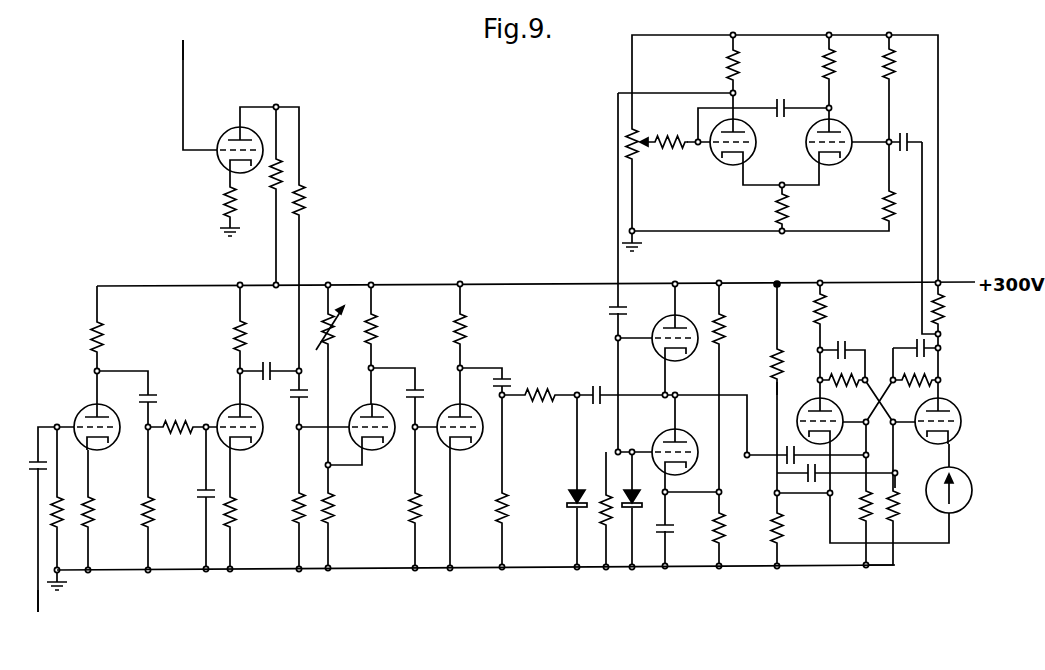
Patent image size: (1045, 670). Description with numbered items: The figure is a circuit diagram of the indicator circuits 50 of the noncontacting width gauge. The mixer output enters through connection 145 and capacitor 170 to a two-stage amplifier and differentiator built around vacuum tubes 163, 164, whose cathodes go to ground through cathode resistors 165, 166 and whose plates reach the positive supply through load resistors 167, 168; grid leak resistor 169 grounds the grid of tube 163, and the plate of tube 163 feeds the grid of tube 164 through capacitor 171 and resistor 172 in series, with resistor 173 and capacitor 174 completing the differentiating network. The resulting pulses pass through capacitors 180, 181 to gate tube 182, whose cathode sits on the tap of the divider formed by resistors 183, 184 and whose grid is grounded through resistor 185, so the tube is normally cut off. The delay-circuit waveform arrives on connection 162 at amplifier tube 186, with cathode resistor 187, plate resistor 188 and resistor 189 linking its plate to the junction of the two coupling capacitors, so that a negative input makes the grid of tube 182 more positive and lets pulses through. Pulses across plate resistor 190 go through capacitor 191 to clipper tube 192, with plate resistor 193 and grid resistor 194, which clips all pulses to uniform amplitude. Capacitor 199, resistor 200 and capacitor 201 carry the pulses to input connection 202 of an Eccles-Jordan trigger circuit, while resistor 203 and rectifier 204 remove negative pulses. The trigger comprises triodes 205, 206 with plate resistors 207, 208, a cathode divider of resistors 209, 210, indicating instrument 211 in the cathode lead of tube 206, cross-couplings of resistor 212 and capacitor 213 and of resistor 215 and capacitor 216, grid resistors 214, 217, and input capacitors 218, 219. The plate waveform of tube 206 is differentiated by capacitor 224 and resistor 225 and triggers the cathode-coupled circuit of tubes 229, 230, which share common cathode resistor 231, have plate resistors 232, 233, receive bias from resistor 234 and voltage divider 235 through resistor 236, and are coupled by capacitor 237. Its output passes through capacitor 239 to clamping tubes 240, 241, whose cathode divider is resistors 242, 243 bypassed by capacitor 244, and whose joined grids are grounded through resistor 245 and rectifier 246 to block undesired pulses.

The indicator circuits 50 is at (716, 602).
The connection 145 is at (38, 605).
The connection 162 is at (183, 50).
The vacuum tube 163 is at (80, 414).
The vacuum tube 164 is at (226, 410).
The cathode resistor 165 is at (93, 514).
The cathode resistor 166 is at (234, 515).
The load resistor 167 is at (102, 333).
The load resistor 168 is at (235, 333).
The grid leak resistor 169 is at (60, 498).
The capacitor 170 is at (36, 463).
The capacitor 171 is at (160, 394).
The resistor 172 is at (177, 432).
The resistor 173 is at (152, 496).
The capacitor 174 is at (191, 501).
The capacitor 180 is at (271, 357).
The capacitor 181 is at (292, 394).
The vacuum tube 182 is at (371, 455).
The resistor 183 is at (340, 333).
The resistor 184 is at (333, 517).
The resistor 185 is at (283, 508).
The vacuum tube 186 is at (232, 136).
The resistor 187 is at (226, 207).
The resistor 188 is at (263, 185).
The resistor 189 is at (304, 203).
The resistor 190 is at (377, 332).
The capacitor 191 is at (418, 389).
The vacuum tube 192 is at (463, 455).
The resistor 193 is at (465, 345).
The resistor 194 is at (415, 506).
The capacitor 199 is at (514, 381).
The resistor 200 is at (540, 404).
The capacitor 201 is at (595, 386).
The input connection 202 is at (771, 372).
The resistor 203 is at (501, 518).
The rectifier 204 is at (570, 492).
The triode 205 is at (840, 406).
The triode 206 is at (960, 406).
The resistor 207 is at (827, 307).
The resistor 208 is at (944, 307).
The resistor 209 is at (759, 360).
The resistor 210 is at (794, 528).
The indicating instrument 211 is at (968, 486).
The resistor 212 is at (926, 380).
The capacitor 213 is at (942, 345).
The resistor 214 is at (863, 522).
The resistor 215 is at (853, 376).
The capacitor 216 is at (841, 342).
The resistor 217 is at (898, 520).
The capacitor 218 is at (786, 464).
The capacitor 219 is at (812, 481).
The capacitor 224 is at (905, 131).
The resistor 225 is at (883, 208).
The vacuum tube 229 is at (726, 160).
The vacuum tube 230 is at (832, 160).
The common cathode resistor 231 is at (776, 212).
The resistor 232 is at (738, 59).
The resistor 233 is at (835, 57).
The resistor 234 is at (886, 70).
The voltage divider 235 is at (635, 150).
The resistor 236 is at (670, 131).
The capacitor 237 is at (779, 96).
The capacitor 239 is at (609, 307).
The vacuum tube 240 is at (666, 318).
The vacuum tube 241 is at (668, 431).
The resistor 242 is at (725, 323).
The resistor 243 is at (736, 528).
The capacitor 244 is at (669, 532).
The resistor 245 is at (600, 515).
The rectifier 246 is at (626, 484).